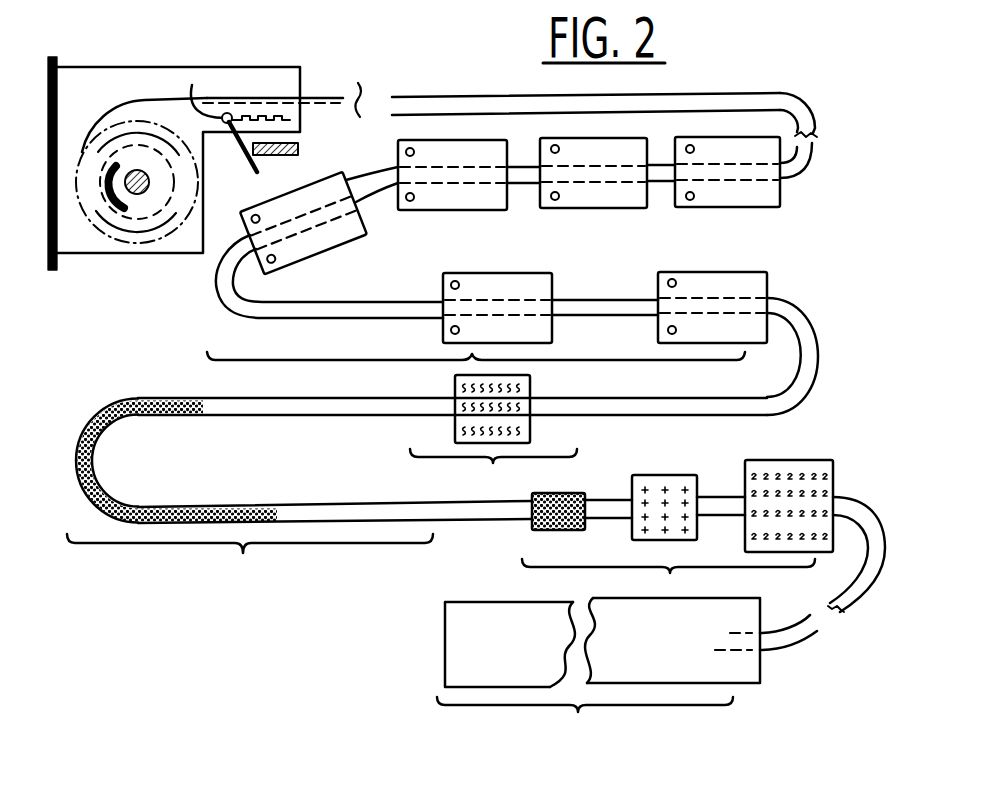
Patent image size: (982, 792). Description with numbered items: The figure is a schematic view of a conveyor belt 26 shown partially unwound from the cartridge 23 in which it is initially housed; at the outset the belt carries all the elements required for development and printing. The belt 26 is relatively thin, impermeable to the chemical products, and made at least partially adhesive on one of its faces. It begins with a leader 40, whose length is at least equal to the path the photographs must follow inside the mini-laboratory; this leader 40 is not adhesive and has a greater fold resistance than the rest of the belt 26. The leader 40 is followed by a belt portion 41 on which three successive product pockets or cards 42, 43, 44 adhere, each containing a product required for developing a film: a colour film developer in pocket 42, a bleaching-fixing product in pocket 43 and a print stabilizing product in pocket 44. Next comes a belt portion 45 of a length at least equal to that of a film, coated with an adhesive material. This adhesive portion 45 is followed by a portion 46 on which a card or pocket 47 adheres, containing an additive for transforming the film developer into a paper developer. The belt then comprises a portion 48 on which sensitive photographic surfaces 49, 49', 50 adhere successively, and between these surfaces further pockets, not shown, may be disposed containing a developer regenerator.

The cartridge 23 is at (165, 67).
The belt 26 is at (479, 107).
The sensitive photographic surface 50 is at (340, 238).
The sensitive photographic surface 49 is at (736, 295).
The sensitive photographic surface 49' is at (525, 298).
The belt portion 48 is at (470, 360).
The card or pocket 47 is at (520, 432).
The belt portion 46 is at (493, 472).
The adhesive belt portion 45 is at (250, 559).
The product pocket or card 44 is at (566, 491).
The product pocket or card 43 is at (657, 475).
The product pocket or card 42 is at (801, 462).
The belt portion 41 is at (668, 581).
The leader 40 is at (598, 670).